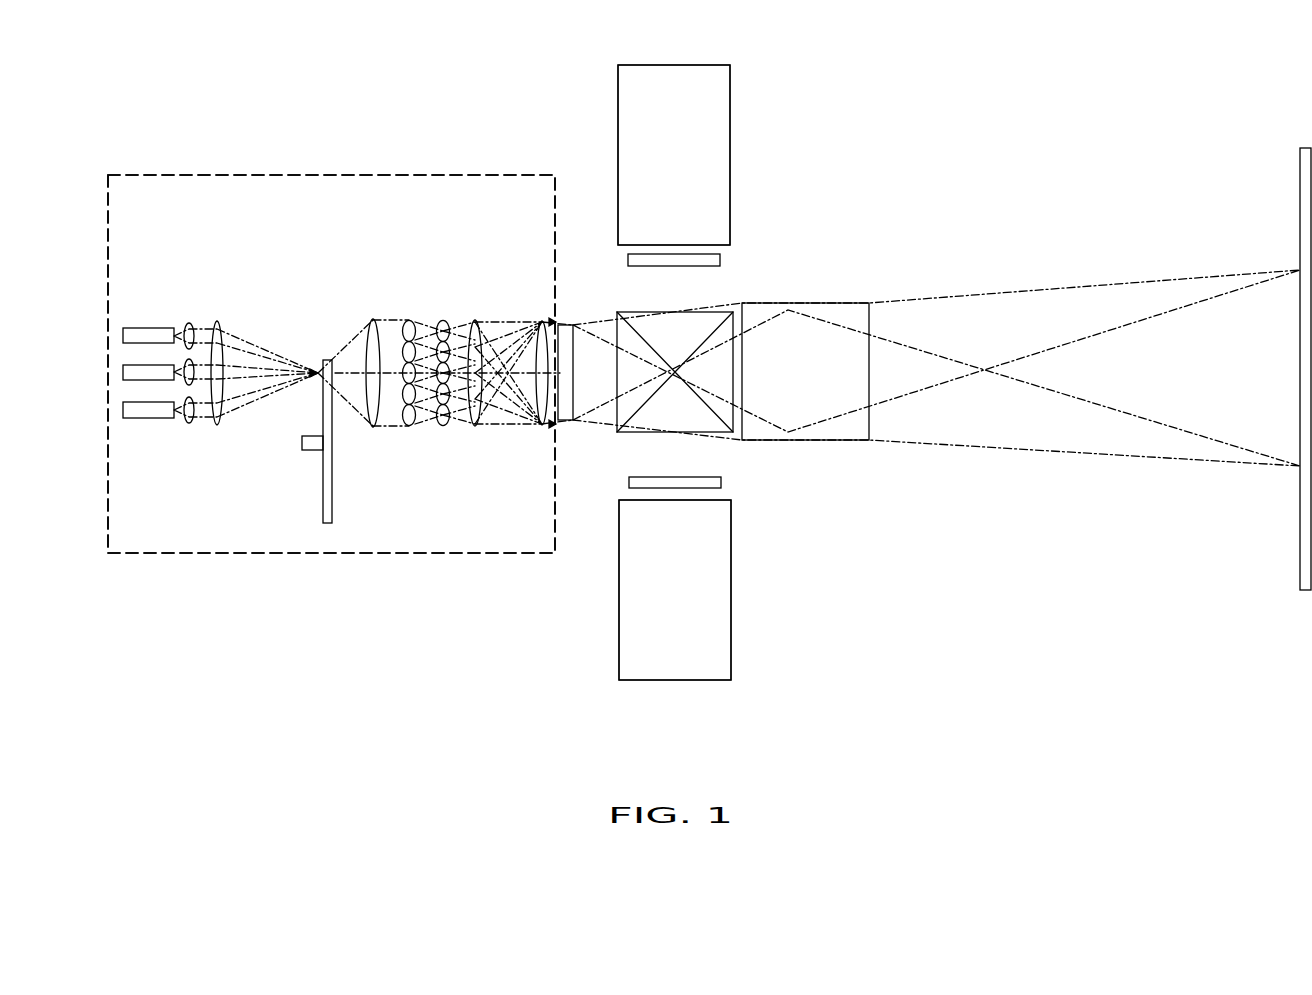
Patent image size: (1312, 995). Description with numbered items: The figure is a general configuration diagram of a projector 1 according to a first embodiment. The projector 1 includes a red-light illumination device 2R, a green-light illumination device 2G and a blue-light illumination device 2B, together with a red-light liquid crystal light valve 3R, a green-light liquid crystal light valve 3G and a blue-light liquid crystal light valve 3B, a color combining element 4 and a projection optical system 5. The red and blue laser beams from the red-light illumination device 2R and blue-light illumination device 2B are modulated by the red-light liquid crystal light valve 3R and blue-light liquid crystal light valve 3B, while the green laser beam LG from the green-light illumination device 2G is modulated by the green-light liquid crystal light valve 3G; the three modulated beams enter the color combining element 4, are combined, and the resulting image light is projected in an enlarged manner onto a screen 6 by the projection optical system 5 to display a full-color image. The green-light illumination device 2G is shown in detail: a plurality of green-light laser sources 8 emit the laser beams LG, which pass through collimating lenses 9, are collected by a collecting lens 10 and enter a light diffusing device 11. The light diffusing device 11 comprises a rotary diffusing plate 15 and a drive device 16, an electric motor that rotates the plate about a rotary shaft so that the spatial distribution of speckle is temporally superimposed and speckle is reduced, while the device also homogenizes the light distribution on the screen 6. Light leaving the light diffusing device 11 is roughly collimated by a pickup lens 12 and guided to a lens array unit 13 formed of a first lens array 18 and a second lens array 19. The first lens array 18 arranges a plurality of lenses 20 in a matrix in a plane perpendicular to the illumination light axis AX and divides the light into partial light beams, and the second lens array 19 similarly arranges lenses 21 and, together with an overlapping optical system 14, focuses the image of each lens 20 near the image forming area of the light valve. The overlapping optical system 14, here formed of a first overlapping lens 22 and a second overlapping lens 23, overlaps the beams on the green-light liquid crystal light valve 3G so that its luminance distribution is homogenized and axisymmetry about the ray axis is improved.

The projector 1 is at (524, 95).
The green-light illumination device 2G is at (320, 174).
The red-light illumination device 2R is at (730, 145).
The blue-light illumination device 2B is at (731, 582).
The green-light liquid crystal light valve 3G is at (565, 324).
The red-light liquid crystal light valve 3R is at (720, 259).
The blue-light liquid crystal light valve 3B is at (722, 482).
The color combining element 4 is at (693, 433).
The projection optical system 5 is at (812, 302).
The screen 6 is at (1300, 193).
The green-light laser source 8 is at (147, 327).
The collimating lens 9 is at (190, 322).
The collecting lens 10 is at (218, 321).
The light diffusing device 11 is at (235, 463).
The pickup lens 12 is at (372, 318).
The lens array unit 13 is at (445, 222).
The overlapping optical system 14 is at (548, 222).
The rotary diffusing plate 15 is at (327, 500).
The drive device 16 is at (300, 447).
The first lens array 18 is at (407, 305).
The second lens array 19 is at (442, 305).
The lens 20 is at (409, 430).
The lens 21 is at (443, 430).
The first overlapping lens 22 is at (476, 318).
The second overlapping lens 23 is at (542, 318).
The green laser beam LG is at (272, 352).
The illumination light axis AX is at (357, 378).